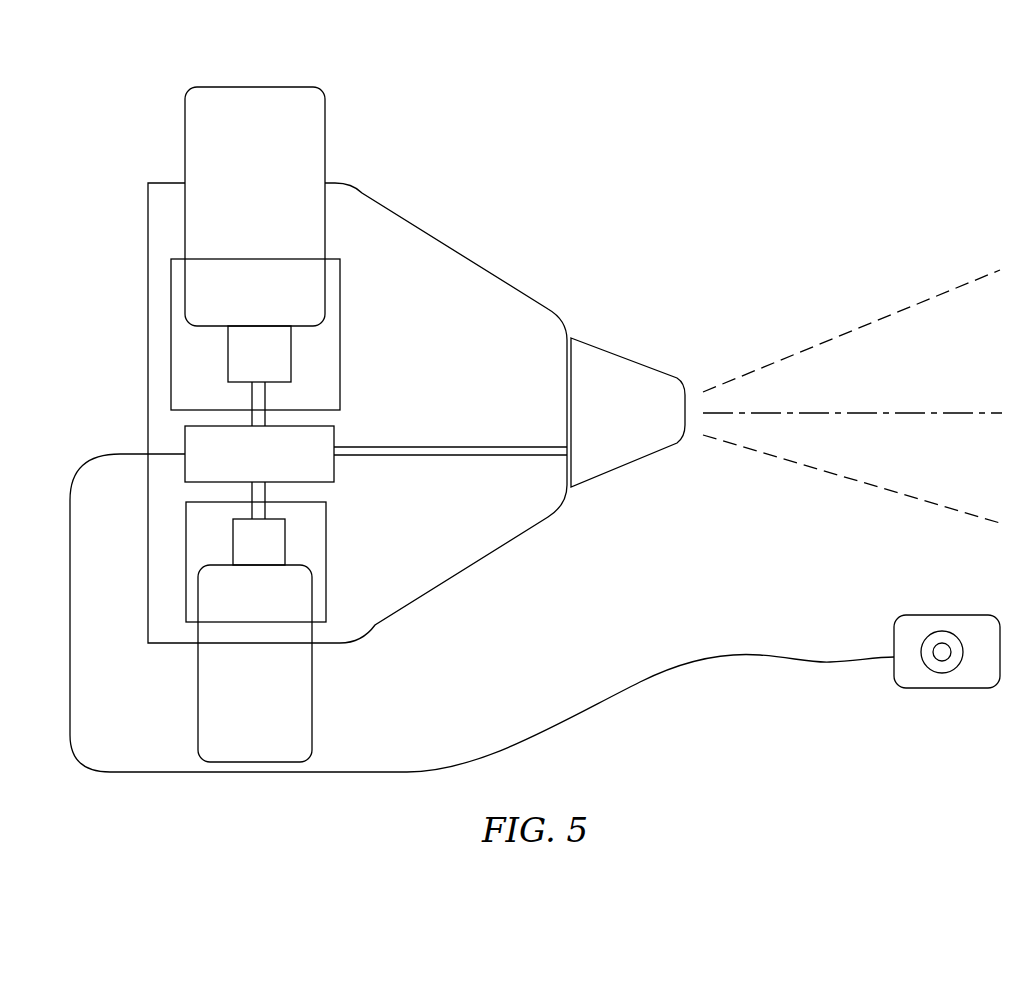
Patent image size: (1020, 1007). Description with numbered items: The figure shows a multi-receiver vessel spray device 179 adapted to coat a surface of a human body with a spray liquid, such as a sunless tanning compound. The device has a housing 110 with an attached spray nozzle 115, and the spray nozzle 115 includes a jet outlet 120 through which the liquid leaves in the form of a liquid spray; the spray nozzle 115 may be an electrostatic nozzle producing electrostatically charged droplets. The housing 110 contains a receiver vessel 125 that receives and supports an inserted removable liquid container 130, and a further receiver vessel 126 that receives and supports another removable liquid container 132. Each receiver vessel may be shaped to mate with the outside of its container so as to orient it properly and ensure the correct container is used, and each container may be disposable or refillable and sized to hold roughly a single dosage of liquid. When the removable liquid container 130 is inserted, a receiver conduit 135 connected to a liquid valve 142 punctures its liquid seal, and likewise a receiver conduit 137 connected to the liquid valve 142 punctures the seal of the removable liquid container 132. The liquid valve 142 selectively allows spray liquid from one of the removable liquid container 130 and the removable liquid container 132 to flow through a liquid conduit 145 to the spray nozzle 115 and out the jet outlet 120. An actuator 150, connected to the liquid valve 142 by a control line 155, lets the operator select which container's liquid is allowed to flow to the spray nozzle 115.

The spray device 179 is at (142, 101).
The housing 110 is at (423, 569).
The spray nozzle 115 is at (606, 336).
The jet outlet 120 is at (702, 405).
The receiver vessel 125 is at (353, 285).
The receiver vessel 126 is at (340, 537).
The removable liquid container 130 is at (289, 163).
The removable liquid container 132 is at (324, 675).
The receiver conduit 135 is at (239, 395).
The receiver conduit 137 is at (233, 496).
The liquid valve 142 is at (350, 477).
The liquid conduit 145 is at (362, 437).
The actuator 150 is at (896, 603).
The control line 155 is at (374, 759).